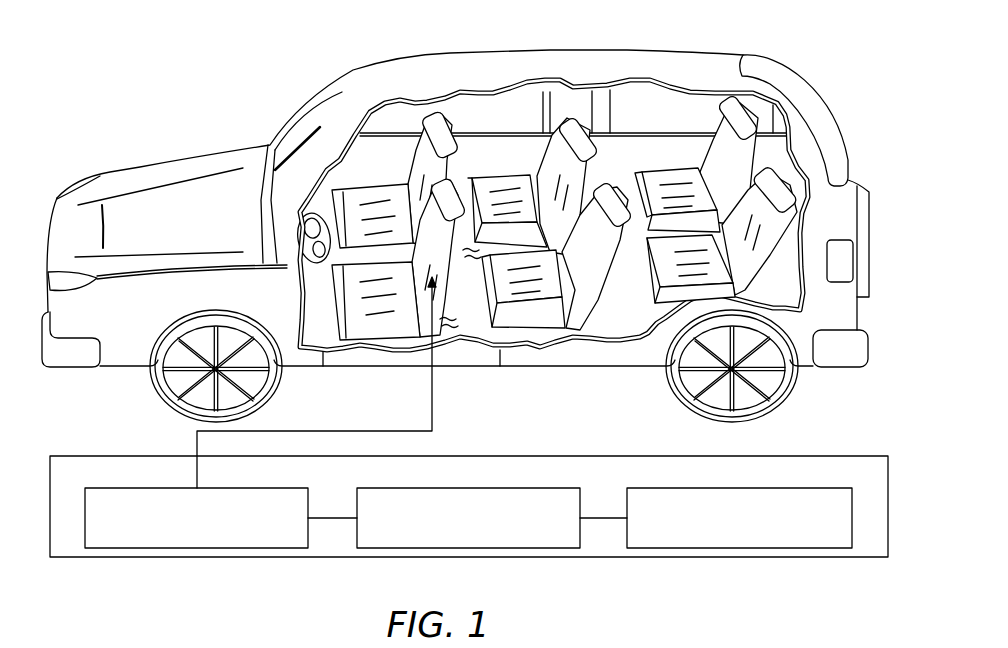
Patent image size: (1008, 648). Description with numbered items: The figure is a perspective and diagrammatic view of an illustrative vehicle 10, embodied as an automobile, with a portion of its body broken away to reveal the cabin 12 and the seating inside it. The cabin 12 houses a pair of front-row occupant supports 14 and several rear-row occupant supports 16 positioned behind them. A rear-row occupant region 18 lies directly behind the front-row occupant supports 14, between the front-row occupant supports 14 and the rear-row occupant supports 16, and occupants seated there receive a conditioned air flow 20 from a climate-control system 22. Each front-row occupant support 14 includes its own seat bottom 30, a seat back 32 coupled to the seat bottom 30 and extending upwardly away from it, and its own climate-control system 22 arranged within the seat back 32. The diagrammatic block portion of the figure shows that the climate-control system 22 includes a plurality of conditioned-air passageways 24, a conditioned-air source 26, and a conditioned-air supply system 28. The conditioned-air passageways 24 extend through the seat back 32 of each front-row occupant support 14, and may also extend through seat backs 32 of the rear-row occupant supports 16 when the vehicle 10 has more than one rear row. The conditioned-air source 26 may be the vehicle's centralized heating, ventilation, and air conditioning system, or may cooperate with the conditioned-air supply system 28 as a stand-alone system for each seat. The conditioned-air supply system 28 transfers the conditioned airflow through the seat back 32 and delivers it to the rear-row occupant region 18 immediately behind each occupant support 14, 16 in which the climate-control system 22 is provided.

The vehicle 10 is at (838, 21).
The cabin 12 is at (670, 98).
The front-row occupant supports 14 is at (449, 102).
The rear-row occupant supports 16 is at (575, 92).
The rear-row occupant region 18 is at (492, 149).
The conditioned air flow 20 is at (452, 328).
The climate-control system 22 is at (510, 456).
The conditioned-air passageways 24 is at (197, 557).
The conditioned-air source 26 is at (538, 548).
The conditioned-air supply system 28 is at (738, 548).
The seat bottom 30 is at (367, 172).
The seat back 32 is at (428, 102).